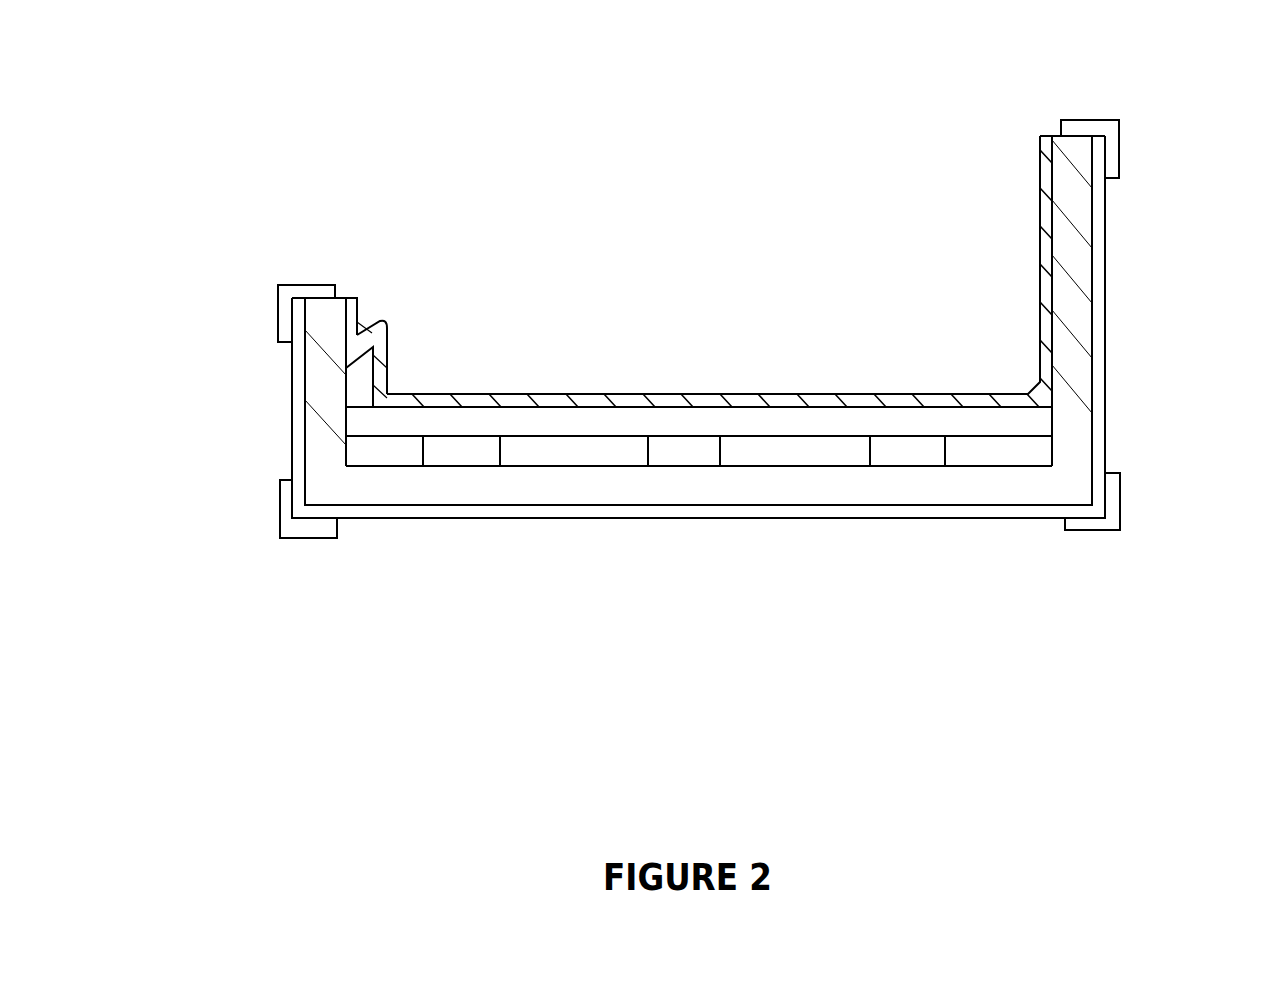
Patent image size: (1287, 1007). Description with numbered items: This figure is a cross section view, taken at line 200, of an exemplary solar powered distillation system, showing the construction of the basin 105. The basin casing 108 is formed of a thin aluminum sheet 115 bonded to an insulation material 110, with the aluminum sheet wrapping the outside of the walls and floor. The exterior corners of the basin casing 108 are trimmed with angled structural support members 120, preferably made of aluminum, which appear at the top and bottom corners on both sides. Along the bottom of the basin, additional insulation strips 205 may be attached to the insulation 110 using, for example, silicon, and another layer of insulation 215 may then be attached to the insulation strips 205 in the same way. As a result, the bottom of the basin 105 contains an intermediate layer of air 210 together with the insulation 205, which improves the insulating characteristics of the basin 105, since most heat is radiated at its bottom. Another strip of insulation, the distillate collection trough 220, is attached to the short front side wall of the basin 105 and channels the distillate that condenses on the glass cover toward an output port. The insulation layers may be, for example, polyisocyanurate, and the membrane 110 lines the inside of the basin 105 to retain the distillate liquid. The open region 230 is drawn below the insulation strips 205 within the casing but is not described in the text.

The cross section line 200 is at (224, 189).
The basin 105 is at (857, 215).
The basin casing 108 is at (1102, 357).
The insulation material 110 is at (783, 403).
The thin aluminum sheet 115 is at (1100, 257).
The angled structural support member 120 is at (281, 294).
The insulation strips 205 is at (458, 453).
The intermediate layer of air 210 is at (758, 452).
The layer of insulation 215 is at (560, 417).
The distillate collection trough 220 is at (355, 383).
The gap 230 is at (560, 490).